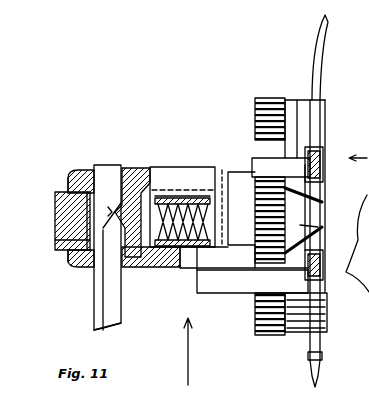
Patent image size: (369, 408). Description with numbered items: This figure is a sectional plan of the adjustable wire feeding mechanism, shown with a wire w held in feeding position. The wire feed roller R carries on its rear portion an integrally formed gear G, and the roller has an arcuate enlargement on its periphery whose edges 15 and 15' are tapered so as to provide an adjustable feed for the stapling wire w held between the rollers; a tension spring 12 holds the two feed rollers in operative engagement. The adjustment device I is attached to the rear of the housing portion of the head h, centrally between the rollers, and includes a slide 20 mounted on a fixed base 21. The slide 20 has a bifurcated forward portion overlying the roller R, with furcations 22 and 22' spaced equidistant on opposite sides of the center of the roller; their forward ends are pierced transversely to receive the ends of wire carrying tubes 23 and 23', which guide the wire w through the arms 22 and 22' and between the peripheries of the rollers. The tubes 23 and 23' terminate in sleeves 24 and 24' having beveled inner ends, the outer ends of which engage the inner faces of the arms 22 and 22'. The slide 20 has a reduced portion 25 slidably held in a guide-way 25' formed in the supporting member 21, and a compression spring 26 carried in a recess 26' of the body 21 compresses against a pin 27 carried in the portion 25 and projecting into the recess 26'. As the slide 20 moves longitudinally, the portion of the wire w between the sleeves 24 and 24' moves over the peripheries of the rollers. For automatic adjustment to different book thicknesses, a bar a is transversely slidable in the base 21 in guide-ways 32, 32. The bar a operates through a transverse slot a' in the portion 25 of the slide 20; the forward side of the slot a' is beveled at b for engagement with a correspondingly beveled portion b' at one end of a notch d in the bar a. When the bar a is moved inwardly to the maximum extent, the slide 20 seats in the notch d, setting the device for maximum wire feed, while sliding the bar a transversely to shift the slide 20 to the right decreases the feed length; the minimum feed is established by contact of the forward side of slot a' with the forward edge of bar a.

The bar a is at (94, 244).
The transverse slot a' is at (53, 221).
The notch d is at (62, 243).
The guide-ways 32 is at (100, 172).
The tapered edge of enlargement 15 is at (224, 172).
The beveled portion b' is at (64, 205).
The reduced portion of slide 25 is at (74, 300).
The guide-way 25' is at (86, 308).
The bevel of slot b is at (135, 186).
The fixed base 21 is at (158, 276).
The slide 20 is at (196, 283).
The spring chamber I is at (173, 159).
The compression spring 26 is at (192, 190).
The recess 26' is at (182, 161).
The pin 27 is at (226, 215).
The furcation 22 is at (302, 138).
The gear G is at (273, 93).
The furcation 22' is at (274, 256).
The wire carrying tube 23 is at (317, 220).
The wire carrying tube 23' is at (299, 352).
The wire feed roller R is at (333, 110).
The stapling wire w is at (294, 218).
The head h is at (298, 210).
The tapered edge of enlargement 15' is at (330, 224).
The sleeve 24 is at (329, 164).
The sleeve 24' is at (329, 266).
The tension spring 12 is at (195, 358).